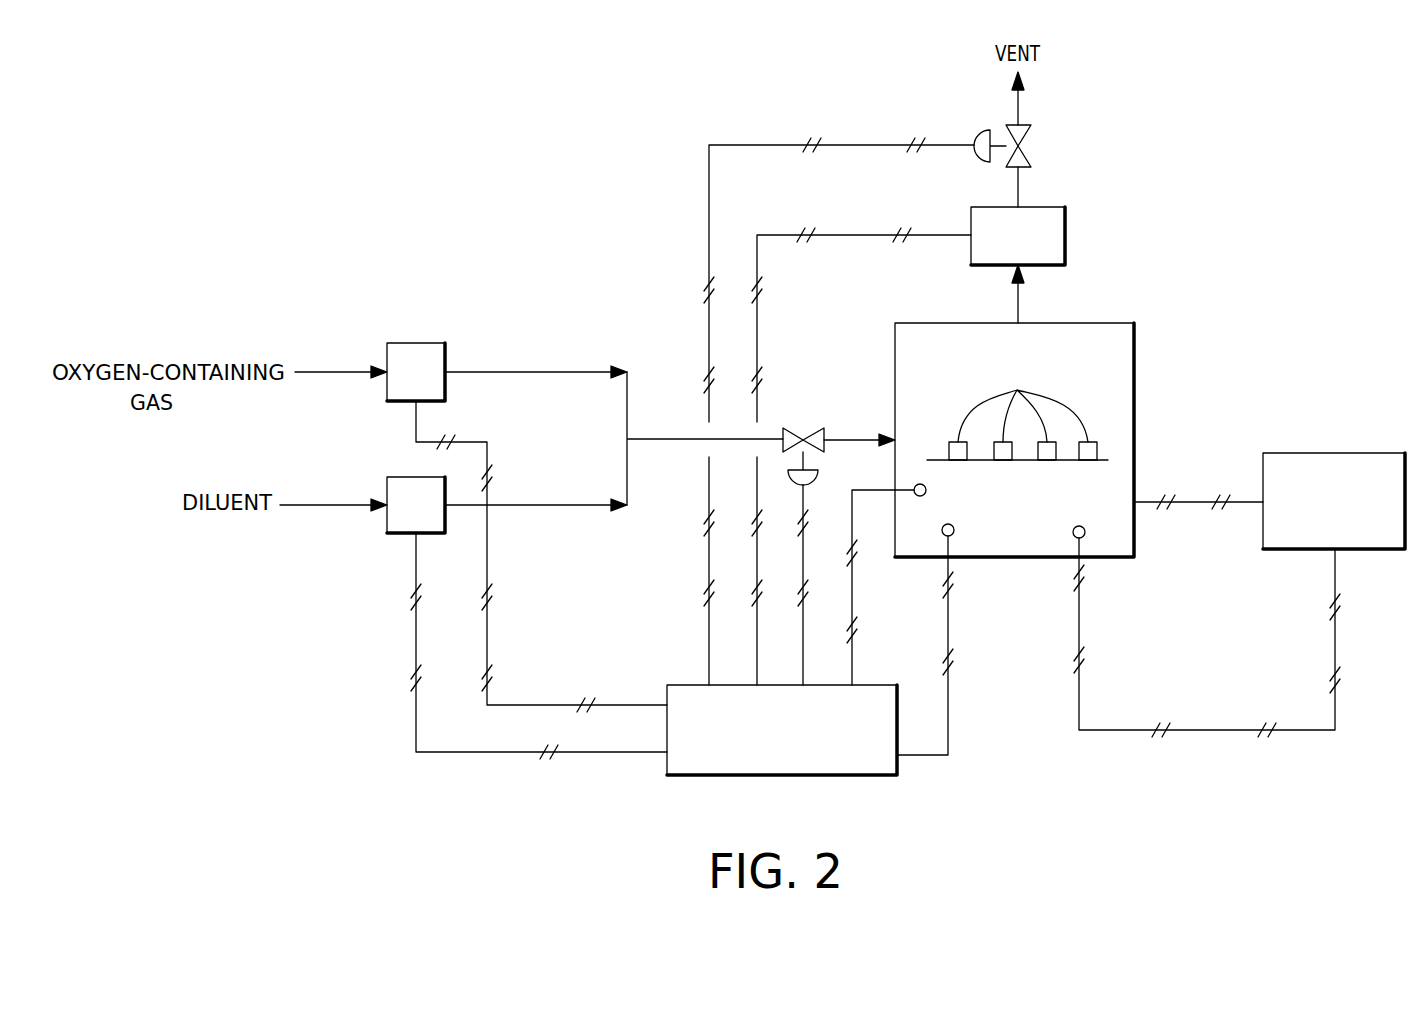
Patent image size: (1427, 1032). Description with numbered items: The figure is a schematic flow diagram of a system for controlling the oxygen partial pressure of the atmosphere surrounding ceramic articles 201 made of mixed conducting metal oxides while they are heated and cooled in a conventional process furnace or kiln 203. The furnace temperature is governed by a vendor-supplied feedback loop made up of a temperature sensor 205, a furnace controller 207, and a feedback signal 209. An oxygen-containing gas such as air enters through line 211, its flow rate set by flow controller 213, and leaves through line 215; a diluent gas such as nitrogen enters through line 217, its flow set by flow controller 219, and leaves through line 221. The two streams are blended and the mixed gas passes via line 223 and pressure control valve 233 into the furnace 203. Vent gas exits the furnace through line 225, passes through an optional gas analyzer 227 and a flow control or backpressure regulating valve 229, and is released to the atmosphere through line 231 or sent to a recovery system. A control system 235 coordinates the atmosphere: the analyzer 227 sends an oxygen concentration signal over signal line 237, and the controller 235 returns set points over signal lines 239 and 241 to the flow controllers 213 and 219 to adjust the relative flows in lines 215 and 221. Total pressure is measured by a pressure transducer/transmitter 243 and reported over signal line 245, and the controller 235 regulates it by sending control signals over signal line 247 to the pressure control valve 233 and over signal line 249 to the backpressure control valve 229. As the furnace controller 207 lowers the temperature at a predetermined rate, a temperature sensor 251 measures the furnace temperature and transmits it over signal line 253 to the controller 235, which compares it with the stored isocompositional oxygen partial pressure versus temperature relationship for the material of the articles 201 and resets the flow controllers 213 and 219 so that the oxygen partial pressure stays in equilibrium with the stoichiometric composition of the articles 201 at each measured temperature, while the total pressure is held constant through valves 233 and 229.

The ceramic articles 201 is at (1017, 412).
The process furnace or kiln 203 is at (1134, 378).
The temperature sensor 205 is at (1077, 526).
The furnace controller 207 is at (1357, 515).
The feedback signal 209 is at (1195, 500).
The oxygen-containing gas line 211 is at (356, 368).
The flow controller 213 is at (405, 343).
The oxygen-containing gas outlet line 215 is at (518, 371).
The diluent gas line 217 is at (327, 507).
The flow controller 219 is at (406, 477).
The diluent gas outlet line 221 is at (526, 504).
The mixed gas line 223 is at (658, 440).
The vent gas line 225 is at (1018, 302).
The gas analyzer 227 is at (1065, 235).
The backpressure regulating valve 229 is at (1027, 143).
The vent line 231 is at (1022, 108).
The pressure control valve 233 is at (805, 437).
The control system 235 is at (803, 741).
The signal line 237 is at (842, 237).
The signal line 239 is at (487, 635).
The signal line 241 is at (416, 643).
The pressure transducer/transmitter 243 is at (955, 530).
The signal line 245 is at (948, 700).
The signal line 247 is at (803, 552).
The signal line 249 is at (709, 200).
The temperature sensor 251 is at (927, 490).
The signal line 253 is at (852, 578).